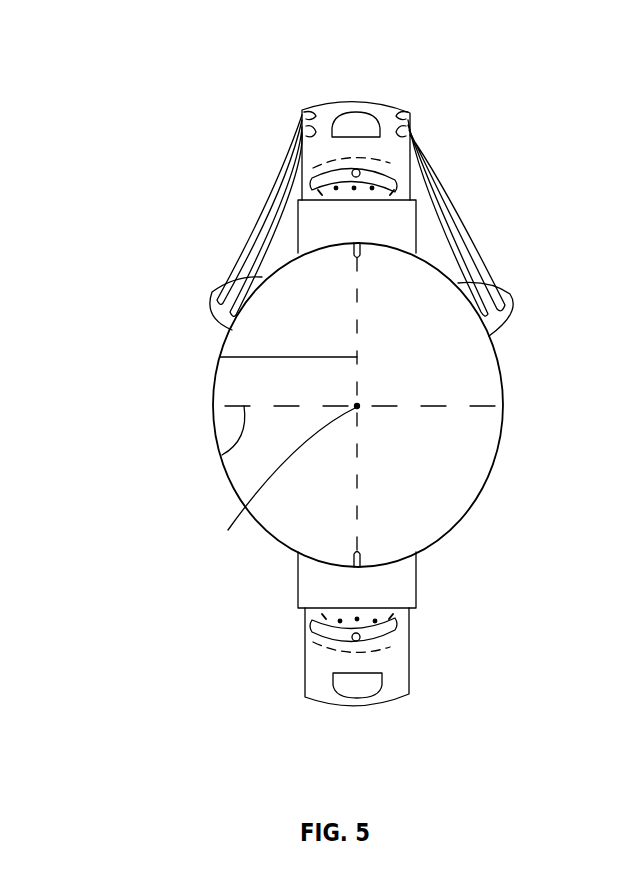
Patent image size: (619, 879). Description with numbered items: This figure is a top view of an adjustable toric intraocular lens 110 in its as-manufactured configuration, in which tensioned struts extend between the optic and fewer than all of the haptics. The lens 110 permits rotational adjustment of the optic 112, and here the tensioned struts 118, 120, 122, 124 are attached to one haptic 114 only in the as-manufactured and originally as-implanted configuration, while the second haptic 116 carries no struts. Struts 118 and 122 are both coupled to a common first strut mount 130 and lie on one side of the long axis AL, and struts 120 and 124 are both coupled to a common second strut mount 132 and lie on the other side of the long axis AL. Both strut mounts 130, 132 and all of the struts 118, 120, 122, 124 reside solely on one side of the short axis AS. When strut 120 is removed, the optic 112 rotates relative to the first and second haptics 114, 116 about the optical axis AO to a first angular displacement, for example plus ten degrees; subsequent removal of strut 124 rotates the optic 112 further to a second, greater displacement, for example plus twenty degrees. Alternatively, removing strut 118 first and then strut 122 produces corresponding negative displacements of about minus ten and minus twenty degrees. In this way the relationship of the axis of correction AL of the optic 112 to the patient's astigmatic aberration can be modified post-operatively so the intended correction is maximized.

The lens 110 is at (511, 96).
The optic 112 is at (505, 384).
The first haptic 114 is at (382, 116).
The second haptic 116 is at (404, 660).
The tensioned strut 118 is at (268, 182).
The tensioned strut 120 is at (432, 175).
The tensioned strut 122 is at (277, 223).
The tensioned strut 124 is at (438, 207).
The first strut mount 130 is at (210, 300).
The second strut mount 132 is at (517, 308).
The long axis AL is at (220, 357).
The short axis AS is at (222, 455).
The optical axis AO is at (273, 477).